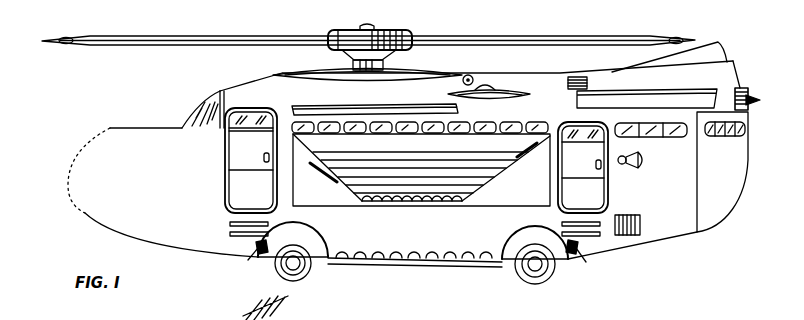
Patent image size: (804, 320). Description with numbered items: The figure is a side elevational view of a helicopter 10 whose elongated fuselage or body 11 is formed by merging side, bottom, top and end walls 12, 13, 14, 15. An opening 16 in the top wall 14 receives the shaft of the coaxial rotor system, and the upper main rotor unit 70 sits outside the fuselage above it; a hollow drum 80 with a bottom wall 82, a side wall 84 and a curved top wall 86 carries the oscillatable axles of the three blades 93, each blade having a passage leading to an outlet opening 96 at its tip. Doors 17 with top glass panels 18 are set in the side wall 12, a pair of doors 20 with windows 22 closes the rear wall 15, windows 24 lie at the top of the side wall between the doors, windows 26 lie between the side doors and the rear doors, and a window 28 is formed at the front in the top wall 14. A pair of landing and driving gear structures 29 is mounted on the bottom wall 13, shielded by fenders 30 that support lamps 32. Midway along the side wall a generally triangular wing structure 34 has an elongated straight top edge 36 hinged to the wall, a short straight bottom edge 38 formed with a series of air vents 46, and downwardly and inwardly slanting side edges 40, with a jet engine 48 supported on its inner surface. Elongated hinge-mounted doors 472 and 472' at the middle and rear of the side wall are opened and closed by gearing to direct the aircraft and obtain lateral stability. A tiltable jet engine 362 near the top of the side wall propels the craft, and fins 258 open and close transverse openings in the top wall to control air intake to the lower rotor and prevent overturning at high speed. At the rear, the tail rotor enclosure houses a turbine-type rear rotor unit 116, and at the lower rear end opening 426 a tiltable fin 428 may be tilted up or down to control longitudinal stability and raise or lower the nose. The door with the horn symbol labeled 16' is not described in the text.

The helicopter 10 is at (70, 207).
The fuselage or body 11 is at (82, 154).
The side wall 12 is at (556, 78).
The bottom wall 13 is at (652, 236).
The top wall 14 is at (512, 74).
The end wall 15 is at (66, 184).
The opening 16 is at (367, 62).
The side door with horn 16' is at (600, 167).
The door 17 is at (232, 153).
The top glass panel 18 is at (252, 112).
The rear door 20 is at (735, 186).
The window 22 is at (748, 131).
The window 24 is at (540, 121).
The window 26 is at (670, 138).
The window 28 is at (206, 112).
The landing and driving gear structure 29 is at (312, 278).
The fender or shield 30 is at (318, 240).
The lamp 32 is at (254, 258).
The wing structure 34 is at (421, 180).
The top edge 36 is at (420, 137).
The bottom edge 38 is at (402, 204).
The side edge 40 is at (352, 188).
The air vent 46 is at (460, 204).
The jet engine 48 is at (326, 170).
The upper main rotor unit 70 is at (368, 35).
The hollow drum 80 is at (414, 36).
The bottom wall 82 is at (340, 54).
The side wall 84 is at (340, 31).
The curved top wall 86 is at (362, 26).
The blade 93 is at (180, 34).
The outlet opening 96 is at (66, 36).
The rear rotor unit of the turbine type 116 is at (720, 44).
The fin 258 is at (448, 86).
The jet engine 362 is at (500, 90).
The lower rear end opening 426 is at (750, 93).
The tiltable fin 428 is at (752, 101).
The elongated door 472 is at (375, 100).
The elongated door 472' is at (647, 89).